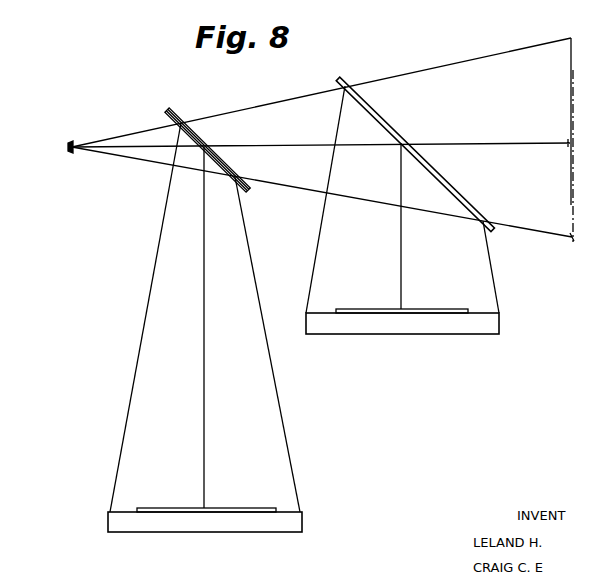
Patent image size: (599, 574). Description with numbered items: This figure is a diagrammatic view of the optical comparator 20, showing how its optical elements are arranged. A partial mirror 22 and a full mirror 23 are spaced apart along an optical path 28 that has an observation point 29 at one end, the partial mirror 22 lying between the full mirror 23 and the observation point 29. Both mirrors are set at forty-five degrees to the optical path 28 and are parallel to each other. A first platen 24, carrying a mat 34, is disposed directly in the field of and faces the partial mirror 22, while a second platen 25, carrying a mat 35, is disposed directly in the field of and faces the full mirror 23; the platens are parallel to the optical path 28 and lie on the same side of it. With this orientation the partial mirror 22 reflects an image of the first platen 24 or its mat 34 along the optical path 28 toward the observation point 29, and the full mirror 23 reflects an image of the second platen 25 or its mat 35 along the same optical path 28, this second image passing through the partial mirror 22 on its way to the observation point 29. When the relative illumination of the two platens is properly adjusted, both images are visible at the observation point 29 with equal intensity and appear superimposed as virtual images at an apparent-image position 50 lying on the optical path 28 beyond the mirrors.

The optical comparator 20 is at (104, 287).
The partial mirror 22 is at (207, 135).
The full mirror 23 is at (341, 81).
The first platen 24 is at (218, 523).
The second platen 25 is at (418, 325).
The optical path 28 is at (447, 142).
The observation point 29 is at (67, 148).
The mat 34 is at (162, 508).
The mat 35 is at (372, 297).
The apparent-image position 50 is at (569, 161).